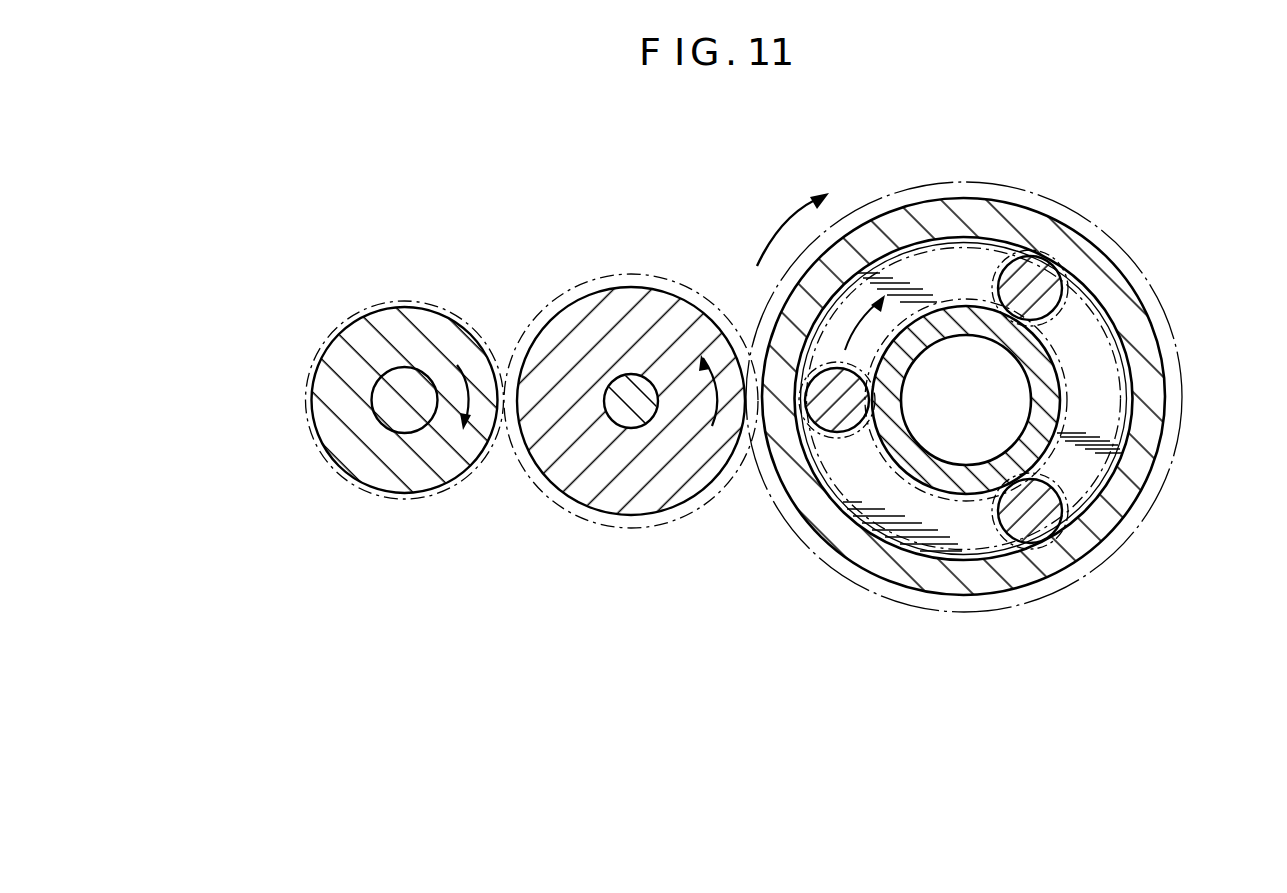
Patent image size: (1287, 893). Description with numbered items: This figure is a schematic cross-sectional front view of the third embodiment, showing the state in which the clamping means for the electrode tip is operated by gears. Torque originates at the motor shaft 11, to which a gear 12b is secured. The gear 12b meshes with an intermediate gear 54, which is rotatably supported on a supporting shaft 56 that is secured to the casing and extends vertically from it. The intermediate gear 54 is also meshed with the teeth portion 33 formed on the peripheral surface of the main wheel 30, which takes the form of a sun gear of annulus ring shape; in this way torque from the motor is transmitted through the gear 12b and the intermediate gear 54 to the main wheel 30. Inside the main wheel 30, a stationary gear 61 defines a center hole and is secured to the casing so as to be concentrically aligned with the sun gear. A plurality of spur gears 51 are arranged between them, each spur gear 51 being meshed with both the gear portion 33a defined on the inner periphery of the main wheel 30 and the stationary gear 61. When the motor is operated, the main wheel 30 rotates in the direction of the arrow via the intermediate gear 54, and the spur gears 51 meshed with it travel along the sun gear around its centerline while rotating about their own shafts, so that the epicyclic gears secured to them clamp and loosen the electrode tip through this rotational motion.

The motor shaft 11 is at (387, 398).
The gear 12b is at (350, 447).
The intermediate gear 54 is at (655, 493).
The supporting shaft 56 is at (620, 408).
The main wheel 30 is at (892, 570).
The teeth portion 33 is at (1158, 508).
The gear portion 33a is at (1102, 332).
The spur gear 51 is at (808, 443).
The stationary gear 61 is at (967, 318).